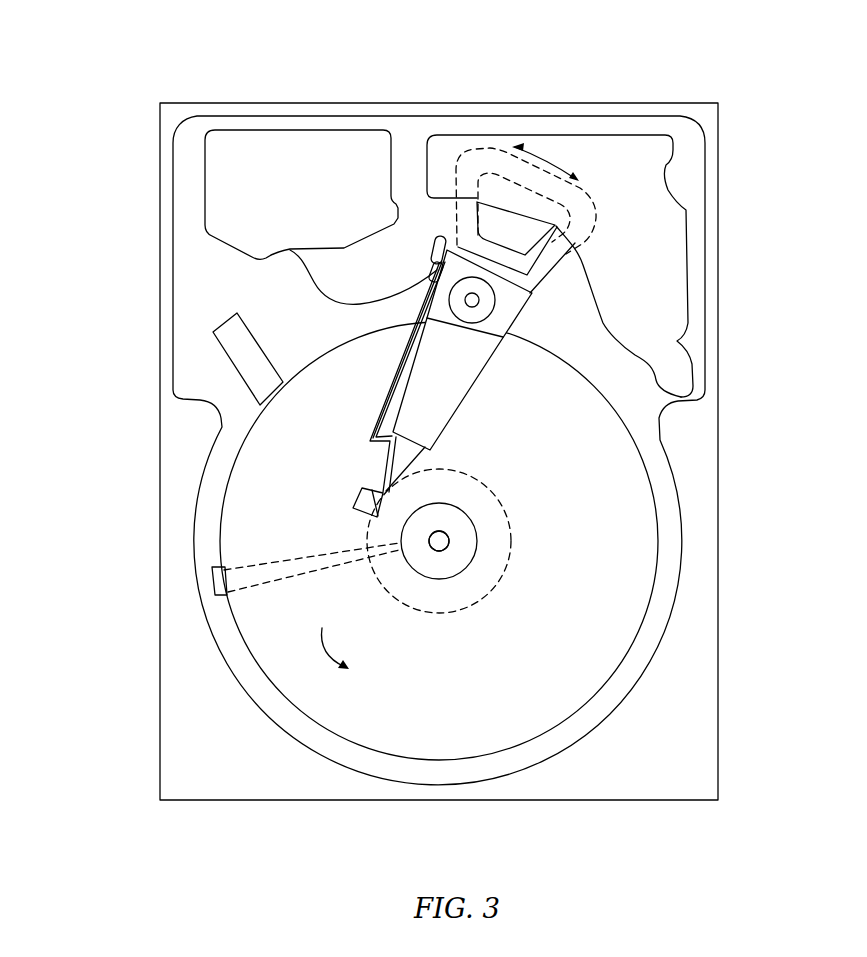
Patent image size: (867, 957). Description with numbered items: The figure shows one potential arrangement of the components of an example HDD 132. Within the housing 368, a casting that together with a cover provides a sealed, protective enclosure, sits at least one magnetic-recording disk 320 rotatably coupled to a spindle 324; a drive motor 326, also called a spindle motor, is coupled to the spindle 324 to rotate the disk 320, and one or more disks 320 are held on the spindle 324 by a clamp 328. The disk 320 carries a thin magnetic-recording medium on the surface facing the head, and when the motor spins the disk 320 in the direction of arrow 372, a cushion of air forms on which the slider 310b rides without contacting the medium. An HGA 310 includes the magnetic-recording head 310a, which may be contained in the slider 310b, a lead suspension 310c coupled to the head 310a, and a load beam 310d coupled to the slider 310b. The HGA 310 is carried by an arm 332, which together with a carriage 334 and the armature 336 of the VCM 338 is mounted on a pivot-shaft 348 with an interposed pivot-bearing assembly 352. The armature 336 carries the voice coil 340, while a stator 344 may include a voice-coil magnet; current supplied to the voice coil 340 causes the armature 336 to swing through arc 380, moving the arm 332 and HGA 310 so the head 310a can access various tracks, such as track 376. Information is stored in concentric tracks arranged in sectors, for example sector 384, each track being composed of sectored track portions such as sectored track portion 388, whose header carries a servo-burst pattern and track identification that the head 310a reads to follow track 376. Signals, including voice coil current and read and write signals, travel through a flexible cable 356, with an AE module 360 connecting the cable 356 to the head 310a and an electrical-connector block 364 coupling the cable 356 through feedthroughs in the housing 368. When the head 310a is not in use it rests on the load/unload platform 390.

The HDD 132 is at (163, 69).
The HGA 310 is at (80, 508).
The magnetic-recording head 310a is at (372, 502).
The slider 310b is at (380, 488).
The lead suspension 310c is at (390, 462).
The load beam 310d is at (390, 452).
The magnetic-recording disk 320 is at (640, 493).
The spindle 324 is at (452, 540).
The drive motor 326 is at (438, 546).
The clamp 328 is at (457, 555).
The arm 332 is at (437, 412).
The carriage 334 is at (490, 345).
The armature 336 is at (455, 226).
The VCM 338 is at (463, 70).
The voice coil 340 is at (475, 197).
The stator 344 is at (668, 216).
The pivot-shaft 348 is at (480, 300).
The pivot-bearing assembly 352 is at (486, 317).
The cable 356 is at (312, 275).
The AE module 360 is at (432, 263).
The electrical-connector block 364 is at (235, 170).
The housing 368 is at (712, 112).
The arrow 372 is at (322, 628).
The track 376 is at (510, 505).
The arc 380 is at (543, 153).
The sector 384 is at (214, 578).
The sectored track portion 388 is at (365, 556).
The load/unload platform 390 is at (232, 322).